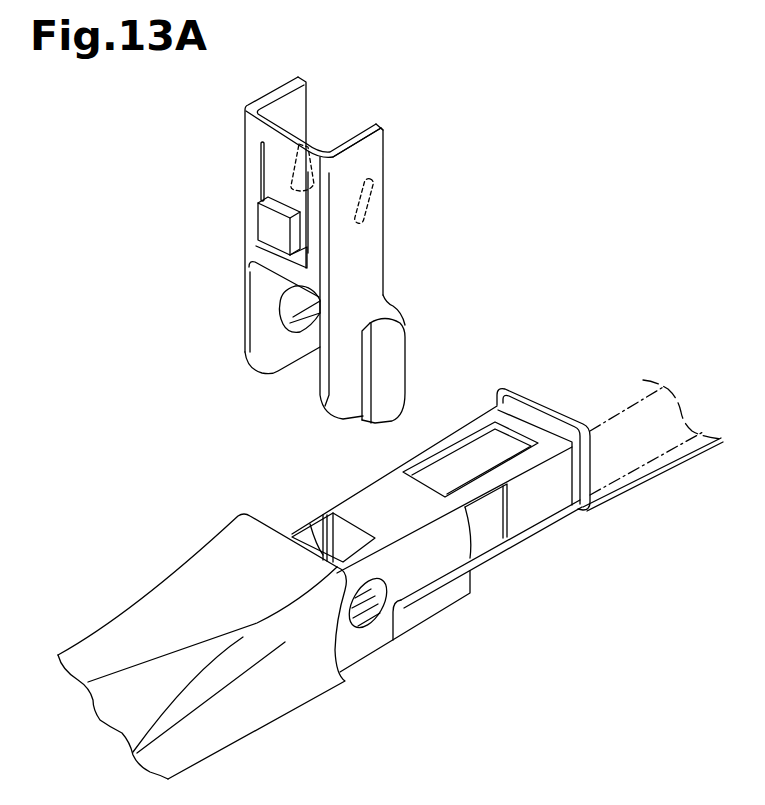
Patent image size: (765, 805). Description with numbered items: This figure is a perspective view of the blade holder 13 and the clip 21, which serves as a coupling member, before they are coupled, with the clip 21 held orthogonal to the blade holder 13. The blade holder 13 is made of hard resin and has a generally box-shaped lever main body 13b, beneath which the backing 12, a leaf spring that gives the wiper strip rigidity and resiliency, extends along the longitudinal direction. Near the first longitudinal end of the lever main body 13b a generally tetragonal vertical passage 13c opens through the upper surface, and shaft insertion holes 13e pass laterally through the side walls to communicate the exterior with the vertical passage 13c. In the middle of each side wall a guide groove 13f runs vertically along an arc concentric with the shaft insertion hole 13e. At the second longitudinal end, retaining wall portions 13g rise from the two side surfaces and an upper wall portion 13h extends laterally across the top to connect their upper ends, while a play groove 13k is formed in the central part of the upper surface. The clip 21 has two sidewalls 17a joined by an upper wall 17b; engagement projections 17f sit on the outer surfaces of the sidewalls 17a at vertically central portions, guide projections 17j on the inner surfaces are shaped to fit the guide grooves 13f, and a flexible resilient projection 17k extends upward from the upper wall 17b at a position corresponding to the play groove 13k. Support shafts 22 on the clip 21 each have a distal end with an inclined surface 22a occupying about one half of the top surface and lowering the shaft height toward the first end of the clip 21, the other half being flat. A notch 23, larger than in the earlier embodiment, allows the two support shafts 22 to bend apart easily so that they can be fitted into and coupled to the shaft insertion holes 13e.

The backing 12 is at (655, 472).
The blade holder 13 is at (190, 512).
The lever main body 13b is at (388, 483).
The vertical passage 13c is at (341, 523).
The shaft insertion hole 13e is at (362, 622).
The guide groove 13f is at (492, 513).
The retaining wall portion 13g is at (586, 471).
The upper wall portion 13h is at (547, 409).
The play groove 13k is at (471, 453).
The sidewall 17a is at (383, 258).
The upper wall 17b is at (270, 257).
The engagement projection 17f is at (405, 365).
The guide projection 17j is at (381, 204).
The resilient projection 17k is at (262, 218).
The clip 21 is at (385, 150).
The support shaft 22 is at (288, 310).
The inclined surface 22a is at (302, 331).
The notch 23 is at (272, 274).